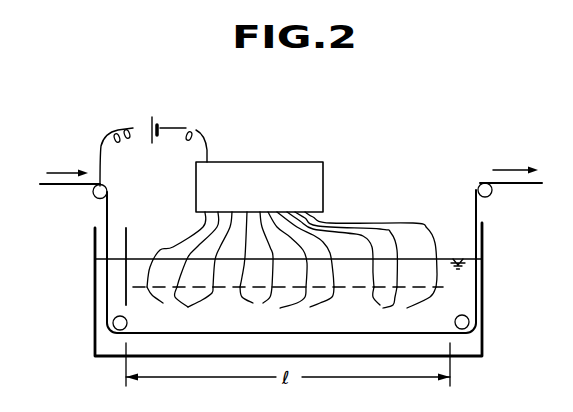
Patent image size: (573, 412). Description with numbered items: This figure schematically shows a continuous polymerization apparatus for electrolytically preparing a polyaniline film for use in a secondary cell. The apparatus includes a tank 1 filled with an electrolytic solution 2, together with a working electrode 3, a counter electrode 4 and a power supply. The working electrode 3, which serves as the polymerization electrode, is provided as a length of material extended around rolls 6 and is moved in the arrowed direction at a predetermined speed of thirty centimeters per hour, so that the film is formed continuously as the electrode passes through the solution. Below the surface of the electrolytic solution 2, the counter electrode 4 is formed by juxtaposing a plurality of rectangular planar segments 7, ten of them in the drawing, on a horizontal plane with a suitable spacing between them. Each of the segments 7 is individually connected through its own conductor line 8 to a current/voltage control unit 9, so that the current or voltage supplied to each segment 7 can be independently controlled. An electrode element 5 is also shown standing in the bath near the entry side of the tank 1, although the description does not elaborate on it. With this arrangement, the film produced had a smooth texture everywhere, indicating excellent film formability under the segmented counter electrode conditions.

The tank 1 is at (483, 247).
The electrolytic solution 2 is at (470, 348).
The working electrode 3 is at (432, 328).
The counter electrode 4 is at (437, 287).
The electrode 5 is at (127, 228).
The rolls 6 is at (99, 204).
The rectangular planar segments 7 is at (291, 309).
The conductor lines 8 is at (177, 245).
The current/voltage control unit 9 is at (318, 180).